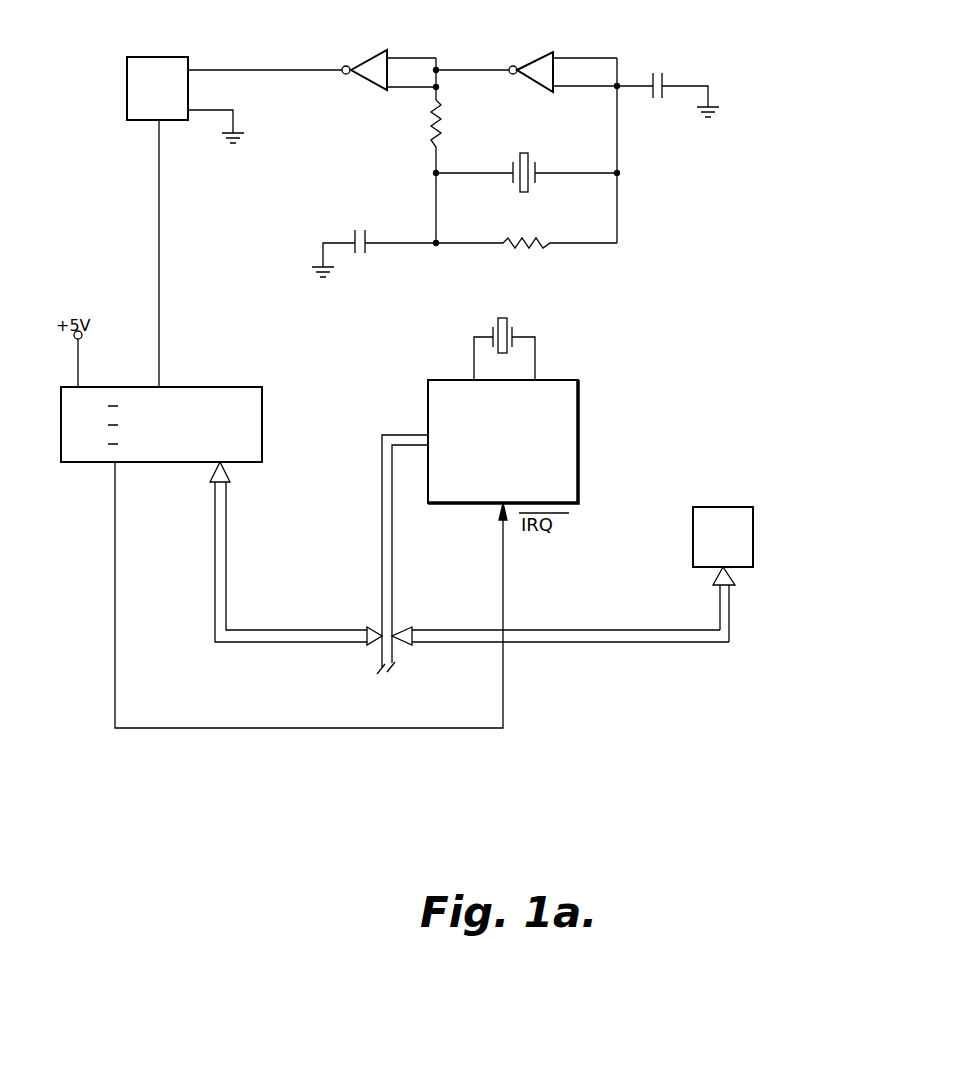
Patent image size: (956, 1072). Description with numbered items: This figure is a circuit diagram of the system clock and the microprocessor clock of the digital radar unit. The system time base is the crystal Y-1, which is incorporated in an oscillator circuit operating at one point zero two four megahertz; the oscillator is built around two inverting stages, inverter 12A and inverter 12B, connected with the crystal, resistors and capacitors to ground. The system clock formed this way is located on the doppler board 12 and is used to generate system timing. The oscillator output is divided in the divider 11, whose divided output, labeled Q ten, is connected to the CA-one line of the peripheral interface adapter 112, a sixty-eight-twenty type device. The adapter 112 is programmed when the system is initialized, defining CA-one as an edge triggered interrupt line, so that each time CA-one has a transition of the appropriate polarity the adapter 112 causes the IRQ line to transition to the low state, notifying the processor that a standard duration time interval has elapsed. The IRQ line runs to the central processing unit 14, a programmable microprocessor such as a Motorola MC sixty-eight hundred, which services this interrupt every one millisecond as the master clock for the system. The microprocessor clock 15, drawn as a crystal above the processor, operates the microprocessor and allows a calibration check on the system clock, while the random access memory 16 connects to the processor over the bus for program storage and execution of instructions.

The divider I1 11 is at (234, 222).
The inverter I2A 12A is at (385, 50).
The inverter I2B 12B is at (553, 52).
The crystal Y1 Y-1 is at (528, 153).
The doppler board 12 is at (161, 408).
The peripheral interface adapter I 12 112 is at (210, 387).
The central processing unit 14 is at (578, 415).
The microprocessor clock 15 is at (507, 318).
The random access memory 16 is at (753, 545).